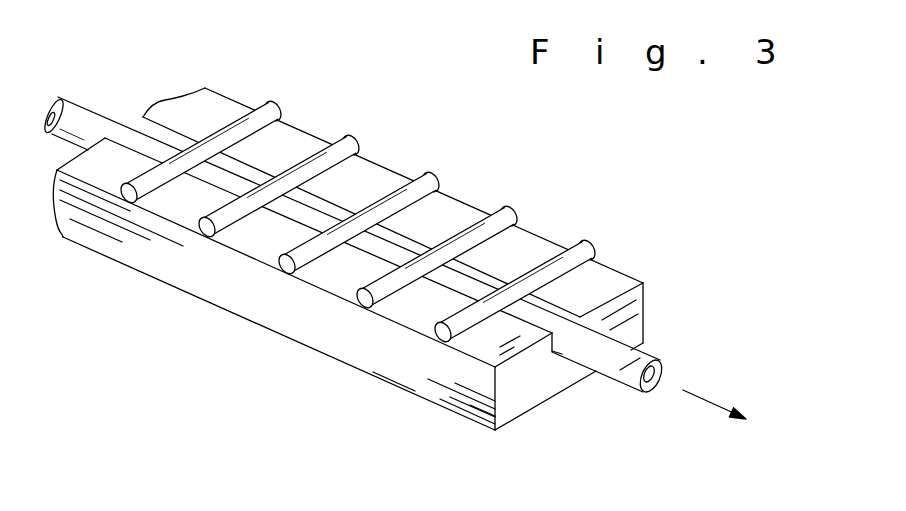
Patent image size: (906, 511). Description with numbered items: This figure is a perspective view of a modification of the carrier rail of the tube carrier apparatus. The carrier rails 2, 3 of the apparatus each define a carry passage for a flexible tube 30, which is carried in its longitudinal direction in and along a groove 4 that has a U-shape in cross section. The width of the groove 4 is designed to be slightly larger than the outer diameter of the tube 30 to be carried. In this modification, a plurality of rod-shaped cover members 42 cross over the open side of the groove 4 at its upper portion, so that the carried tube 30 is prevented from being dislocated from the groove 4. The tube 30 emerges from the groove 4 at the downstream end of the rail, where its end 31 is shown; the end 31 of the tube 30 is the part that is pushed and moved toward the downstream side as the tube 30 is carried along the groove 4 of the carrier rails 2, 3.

The carrier rail 2 is at (349, 259).
The carrier rail 3 is at (253, 307).
The groove 4 is at (558, 356).
The tube 30 is at (90, 117).
The end of the tube 31 is at (645, 392).
The rod-shaped cover members 42 is at (431, 176).